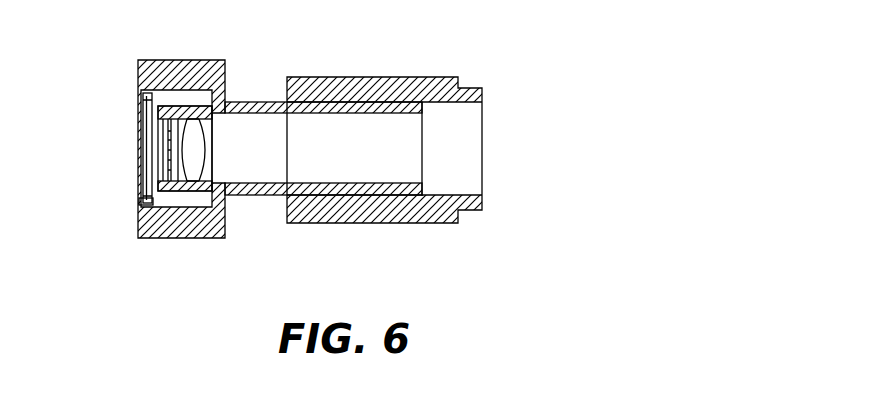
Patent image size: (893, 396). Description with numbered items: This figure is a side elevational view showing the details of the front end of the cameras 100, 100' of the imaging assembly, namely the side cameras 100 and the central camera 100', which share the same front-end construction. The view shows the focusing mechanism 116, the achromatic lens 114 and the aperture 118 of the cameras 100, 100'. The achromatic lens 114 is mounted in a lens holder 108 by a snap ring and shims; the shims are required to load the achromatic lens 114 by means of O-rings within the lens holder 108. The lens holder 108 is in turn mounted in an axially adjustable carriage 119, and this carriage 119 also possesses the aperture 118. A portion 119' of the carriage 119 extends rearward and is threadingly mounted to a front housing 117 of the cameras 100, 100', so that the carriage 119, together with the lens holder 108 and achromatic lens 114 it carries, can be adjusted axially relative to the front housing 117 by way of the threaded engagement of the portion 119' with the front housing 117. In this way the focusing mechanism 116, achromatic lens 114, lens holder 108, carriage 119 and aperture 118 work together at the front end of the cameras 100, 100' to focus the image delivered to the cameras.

The side camera 100 is at (298, 151).
The central camera 100' is at (298, 151).
The lens holder 108 is at (200, 116).
The achromatic lens 114 is at (200, 192).
The focusing mechanism 116 is at (153, 55).
The front housing 117 is at (428, 72).
The aperture 118 is at (151, 206).
The carriage 119 is at (101, 128).
The portion of carriage 119' is at (323, 111).